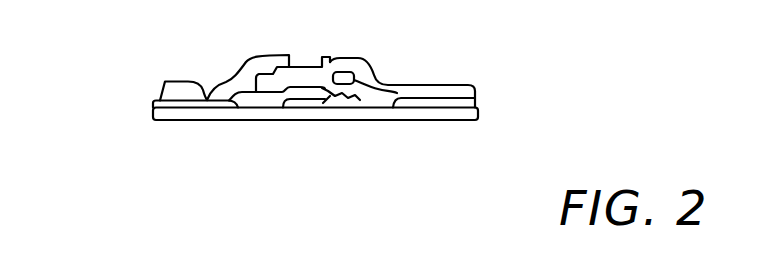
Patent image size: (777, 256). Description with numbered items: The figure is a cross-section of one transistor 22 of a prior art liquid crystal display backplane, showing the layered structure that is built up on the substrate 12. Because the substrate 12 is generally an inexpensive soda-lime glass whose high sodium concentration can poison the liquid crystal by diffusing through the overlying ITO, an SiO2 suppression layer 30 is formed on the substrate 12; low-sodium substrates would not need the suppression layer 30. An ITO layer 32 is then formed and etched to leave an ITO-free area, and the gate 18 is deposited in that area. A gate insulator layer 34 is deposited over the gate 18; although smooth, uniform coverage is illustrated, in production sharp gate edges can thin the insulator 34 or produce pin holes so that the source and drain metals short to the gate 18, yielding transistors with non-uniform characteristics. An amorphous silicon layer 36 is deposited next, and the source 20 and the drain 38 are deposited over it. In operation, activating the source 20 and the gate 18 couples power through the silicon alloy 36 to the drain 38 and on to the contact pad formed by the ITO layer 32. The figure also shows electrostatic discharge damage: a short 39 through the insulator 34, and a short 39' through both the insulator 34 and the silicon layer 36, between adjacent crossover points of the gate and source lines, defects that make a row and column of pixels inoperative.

The substrate 12 is at (322, 160).
The gate 18 is at (325, 104).
The source 20 is at (382, 84).
The transistor 22 is at (368, 46).
The suppression layer 30 is at (447, 122).
The ITO layer 32 is at (157, 103).
The gate insulator layer 34 is at (431, 91).
The amorphous silicon layer 36 is at (302, 67).
The drain 38 is at (247, 67).
The short 39 is at (377, 125).
The short 39' is at (347, 44).